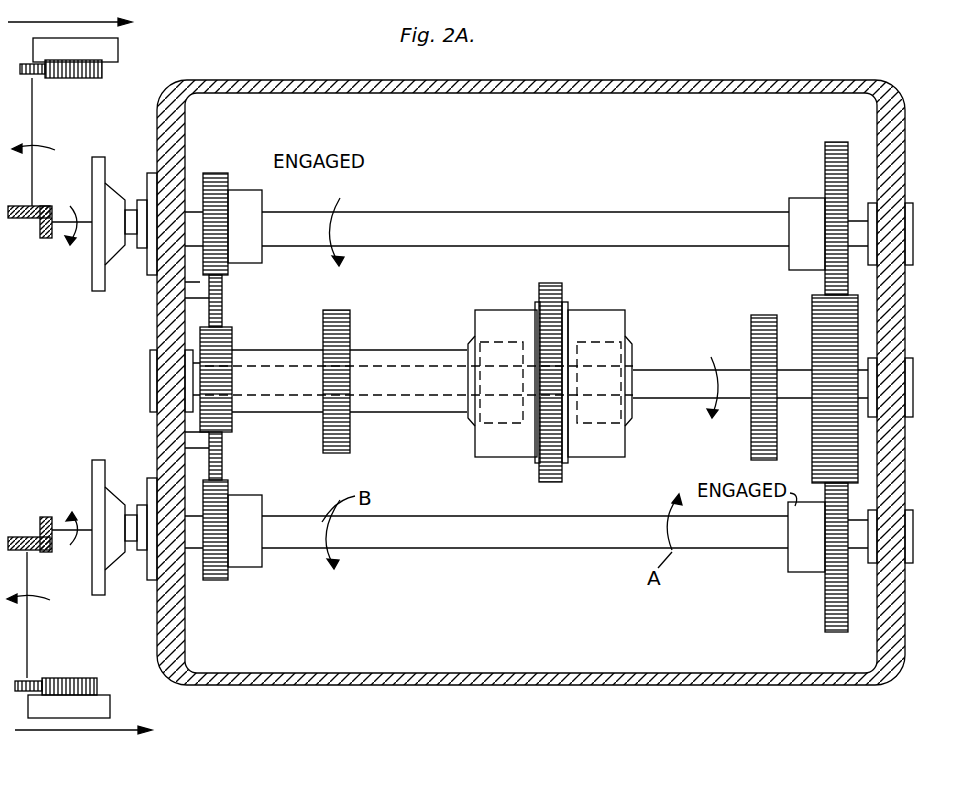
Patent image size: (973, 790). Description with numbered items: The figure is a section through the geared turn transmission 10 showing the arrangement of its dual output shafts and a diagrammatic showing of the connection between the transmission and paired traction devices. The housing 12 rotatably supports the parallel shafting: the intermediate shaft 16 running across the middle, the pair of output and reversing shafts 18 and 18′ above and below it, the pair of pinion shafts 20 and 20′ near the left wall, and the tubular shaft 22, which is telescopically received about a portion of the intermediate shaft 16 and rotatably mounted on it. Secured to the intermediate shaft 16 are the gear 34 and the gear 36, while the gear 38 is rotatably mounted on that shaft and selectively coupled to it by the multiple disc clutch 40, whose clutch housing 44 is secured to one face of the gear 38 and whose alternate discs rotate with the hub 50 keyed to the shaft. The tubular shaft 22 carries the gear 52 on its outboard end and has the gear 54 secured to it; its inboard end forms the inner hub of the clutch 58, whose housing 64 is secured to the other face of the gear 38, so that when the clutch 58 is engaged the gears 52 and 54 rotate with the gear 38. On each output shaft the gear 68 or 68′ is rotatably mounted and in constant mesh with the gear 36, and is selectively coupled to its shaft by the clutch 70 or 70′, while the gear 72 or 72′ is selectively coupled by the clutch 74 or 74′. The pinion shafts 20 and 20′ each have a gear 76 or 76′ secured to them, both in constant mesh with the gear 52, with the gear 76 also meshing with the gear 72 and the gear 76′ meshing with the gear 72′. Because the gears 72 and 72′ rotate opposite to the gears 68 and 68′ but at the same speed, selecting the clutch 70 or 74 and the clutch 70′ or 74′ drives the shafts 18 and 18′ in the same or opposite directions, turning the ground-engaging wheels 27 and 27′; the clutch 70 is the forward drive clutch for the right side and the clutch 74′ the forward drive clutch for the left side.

The geared turn transmission 10 is at (345, 72).
The housing 12 is at (687, 82).
The intermediate shaft 16 is at (668, 383).
The output and reversing shaft 18 is at (503, 538).
The output and reversing shaft 18′ is at (585, 228).
The pinion shaft 20 is at (200, 443).
The pinion shaft 20′ is at (165, 303).
The tubular shaft 22 is at (398, 403).
The ground-engaging wheel 27 is at (97, 690).
The ground-engaging wheel 27′ is at (104, 70).
The gear 34 is at (760, 431).
The gear 36 is at (850, 340).
The gear 38 is at (548, 473).
The clutch means 40 is at (592, 467).
The clutch housing 44 is at (607, 310).
The hub 50 is at (631, 358).
The gear 52 is at (233, 337).
The gear 54 is at (339, 332).
The clutch 58 is at (468, 316).
The housing 64 is at (497, 310).
The gear 68 is at (824, 602).
The gear 68′ is at (825, 152).
The clutch 70 is at (800, 562).
The clutch 70′ is at (800, 205).
The gear 72 is at (217, 582).
The gear 72′ is at (217, 173).
The clutch 74 is at (250, 560).
The clutch 74′ is at (265, 196).
The gear 76 is at (226, 458).
The gear 76′ is at (226, 300).